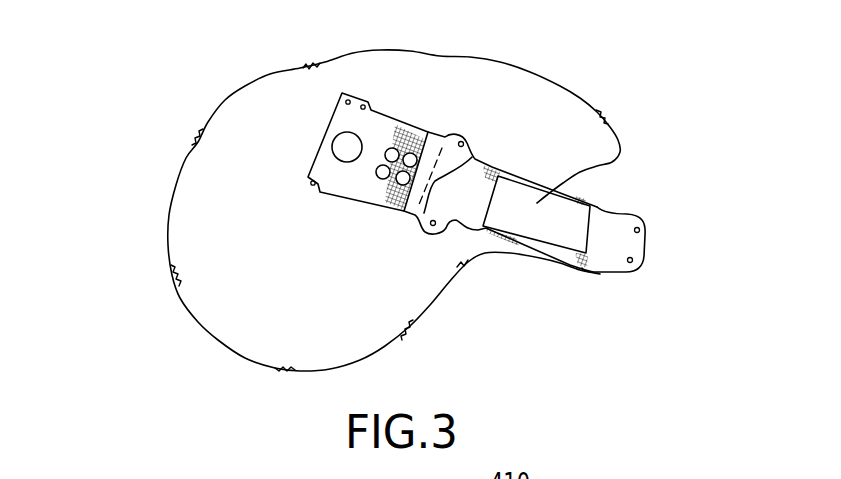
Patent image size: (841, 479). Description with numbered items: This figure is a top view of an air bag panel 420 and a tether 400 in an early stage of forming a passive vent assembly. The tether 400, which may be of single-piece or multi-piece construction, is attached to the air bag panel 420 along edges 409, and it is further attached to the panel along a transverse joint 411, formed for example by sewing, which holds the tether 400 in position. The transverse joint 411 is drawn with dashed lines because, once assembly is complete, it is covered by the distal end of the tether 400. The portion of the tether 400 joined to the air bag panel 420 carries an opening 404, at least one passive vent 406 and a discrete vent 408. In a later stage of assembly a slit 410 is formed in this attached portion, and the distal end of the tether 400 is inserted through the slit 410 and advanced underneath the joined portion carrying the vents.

The tether 400 is at (621, 216).
The opening 404 is at (608, 237).
The passive vent 406 is at (383, 180).
The discrete vent 408 is at (343, 144).
The edges 409 is at (383, 114).
The slit 410 is at (420, 136).
The transverse joint 411 is at (475, 158).
The air bag panel 420 is at (188, 195).